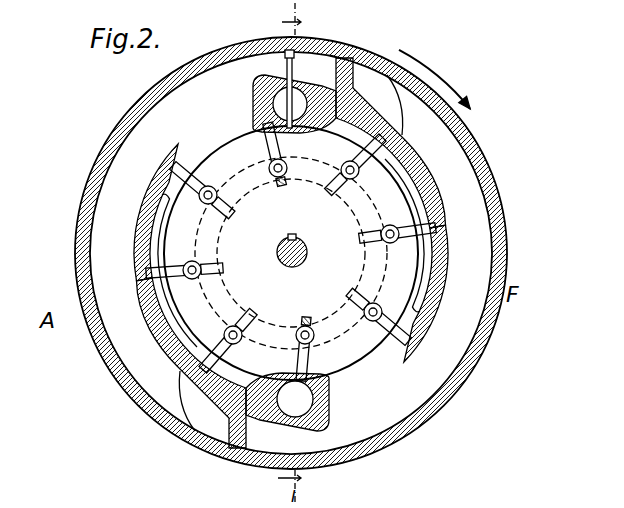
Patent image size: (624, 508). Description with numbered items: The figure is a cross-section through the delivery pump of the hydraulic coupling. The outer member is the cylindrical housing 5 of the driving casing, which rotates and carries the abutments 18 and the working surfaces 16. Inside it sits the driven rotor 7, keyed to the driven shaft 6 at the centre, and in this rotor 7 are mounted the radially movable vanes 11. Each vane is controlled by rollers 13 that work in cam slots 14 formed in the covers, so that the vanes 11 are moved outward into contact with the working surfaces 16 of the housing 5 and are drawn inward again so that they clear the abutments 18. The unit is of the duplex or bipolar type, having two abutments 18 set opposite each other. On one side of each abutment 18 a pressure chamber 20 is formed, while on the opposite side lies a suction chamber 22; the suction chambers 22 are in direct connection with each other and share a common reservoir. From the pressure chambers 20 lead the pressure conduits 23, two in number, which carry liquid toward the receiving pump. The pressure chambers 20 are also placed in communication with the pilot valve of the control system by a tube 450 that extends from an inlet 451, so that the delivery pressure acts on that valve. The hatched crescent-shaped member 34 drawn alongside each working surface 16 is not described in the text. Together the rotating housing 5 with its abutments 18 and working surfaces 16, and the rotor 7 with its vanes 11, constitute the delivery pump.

The cylindrical housing 5 is at (478, 140).
The driven shaft 6 is at (307, 252).
The driven rotor 7 is at (410, 276).
The vanes 11 is at (422, 232).
The rollers 13 is at (396, 216).
The cam slots 14 is at (250, 186).
The working surfaces 16 is at (420, 312).
The abutments 18 is at (254, 118).
The pressure chambers 20 is at (336, 118).
The suction chambers 22 is at (188, 113).
The pressure conduits 23 is at (310, 90).
The wing blade 34 is at (413, 342).
The tube 450 is at (284, 44).
The inlet 451 is at (291, 124).